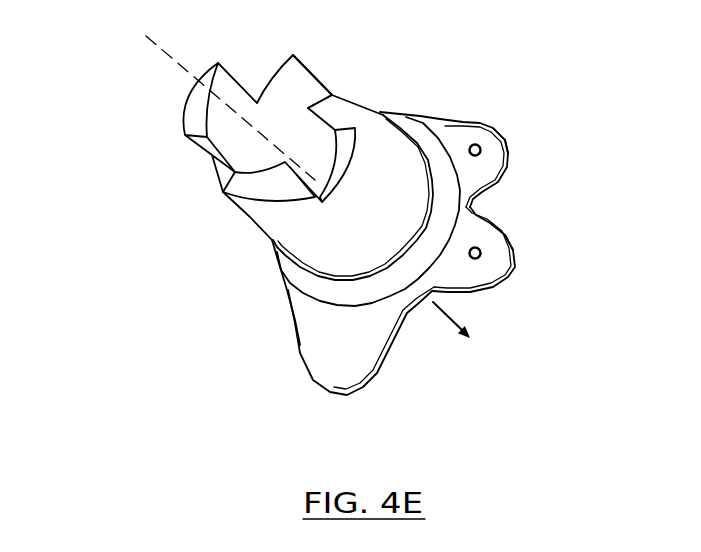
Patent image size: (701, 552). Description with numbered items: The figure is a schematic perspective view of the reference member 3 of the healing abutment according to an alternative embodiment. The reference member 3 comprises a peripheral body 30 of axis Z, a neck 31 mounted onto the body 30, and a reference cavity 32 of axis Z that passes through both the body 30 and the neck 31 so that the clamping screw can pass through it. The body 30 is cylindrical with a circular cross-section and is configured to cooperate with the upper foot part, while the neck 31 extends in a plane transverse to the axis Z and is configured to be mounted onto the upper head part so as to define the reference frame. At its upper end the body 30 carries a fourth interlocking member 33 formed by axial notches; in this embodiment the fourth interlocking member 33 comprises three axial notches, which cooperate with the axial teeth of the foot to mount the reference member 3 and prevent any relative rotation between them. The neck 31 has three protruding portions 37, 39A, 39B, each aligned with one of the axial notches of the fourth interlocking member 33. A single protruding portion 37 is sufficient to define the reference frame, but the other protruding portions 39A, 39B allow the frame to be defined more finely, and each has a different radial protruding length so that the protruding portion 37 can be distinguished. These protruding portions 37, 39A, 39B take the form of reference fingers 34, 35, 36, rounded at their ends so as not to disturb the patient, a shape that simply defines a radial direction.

The reference member 3 is at (95, 90).
The peripheral body 30 is at (102, 142).
The neck 31 is at (232, 342).
The reference cavity 32 is at (233, 132).
The fourth interlocking member 33 is at (300, 52).
The reference finger 34 is at (374, 388).
The reference finger 35 is at (519, 253).
The reference finger 36 is at (506, 139).
The protruding portion 37 is at (375, 398).
The protruding portion 39A is at (507, 112).
The protruding portion 39B is at (520, 232).
The axis Z is at (466, 332).